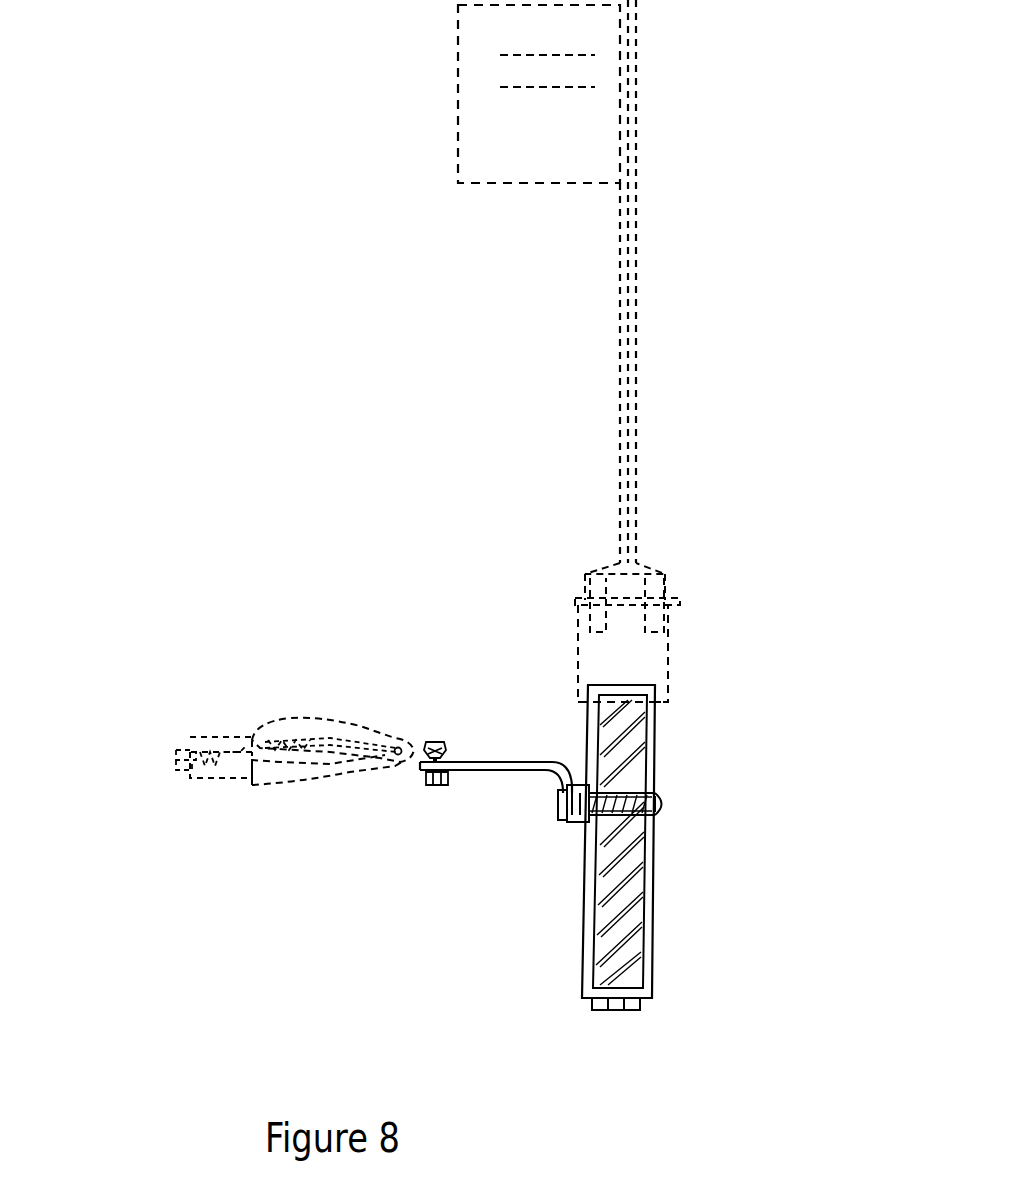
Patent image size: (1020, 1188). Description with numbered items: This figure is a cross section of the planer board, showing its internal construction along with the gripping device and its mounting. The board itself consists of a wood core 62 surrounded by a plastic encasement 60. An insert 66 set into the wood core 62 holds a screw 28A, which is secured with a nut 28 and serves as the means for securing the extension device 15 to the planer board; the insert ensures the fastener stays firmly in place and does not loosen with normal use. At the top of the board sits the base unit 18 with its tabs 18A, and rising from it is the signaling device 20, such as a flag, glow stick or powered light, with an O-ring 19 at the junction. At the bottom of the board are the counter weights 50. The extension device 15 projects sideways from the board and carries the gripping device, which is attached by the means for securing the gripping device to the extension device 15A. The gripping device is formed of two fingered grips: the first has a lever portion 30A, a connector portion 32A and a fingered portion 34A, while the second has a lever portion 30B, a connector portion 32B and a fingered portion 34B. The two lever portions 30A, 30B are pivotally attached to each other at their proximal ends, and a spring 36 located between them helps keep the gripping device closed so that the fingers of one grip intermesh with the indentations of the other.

The extension device 15 is at (493, 762).
The means for securing the gripping device to the extension device 15A is at (433, 742).
The base unit 18 is at (670, 635).
The tabs 18A is at (670, 692).
The O-ring 19 is at (676, 600).
The signaling device 20 is at (637, 353).
The nut 28 is at (558, 812).
The screw 28A is at (662, 800).
The lever portion of first fingered grip 30A is at (347, 780).
The lever portion of second fingered grip 30B is at (355, 722).
The connector portion of first fingered grip 32A is at (250, 790).
The connector portion of second fingered grip 32B is at (255, 742).
The fingered portion of first fingered grip 34A is at (188, 780).
The fingered portion of second fingered grip 34B is at (185, 738).
The spring 36 is at (300, 745).
The counter weight 50 is at (640, 1005).
The plastic encasement 60 is at (655, 745).
The wood core 62 is at (648, 717).
The insert 66 is at (652, 818).